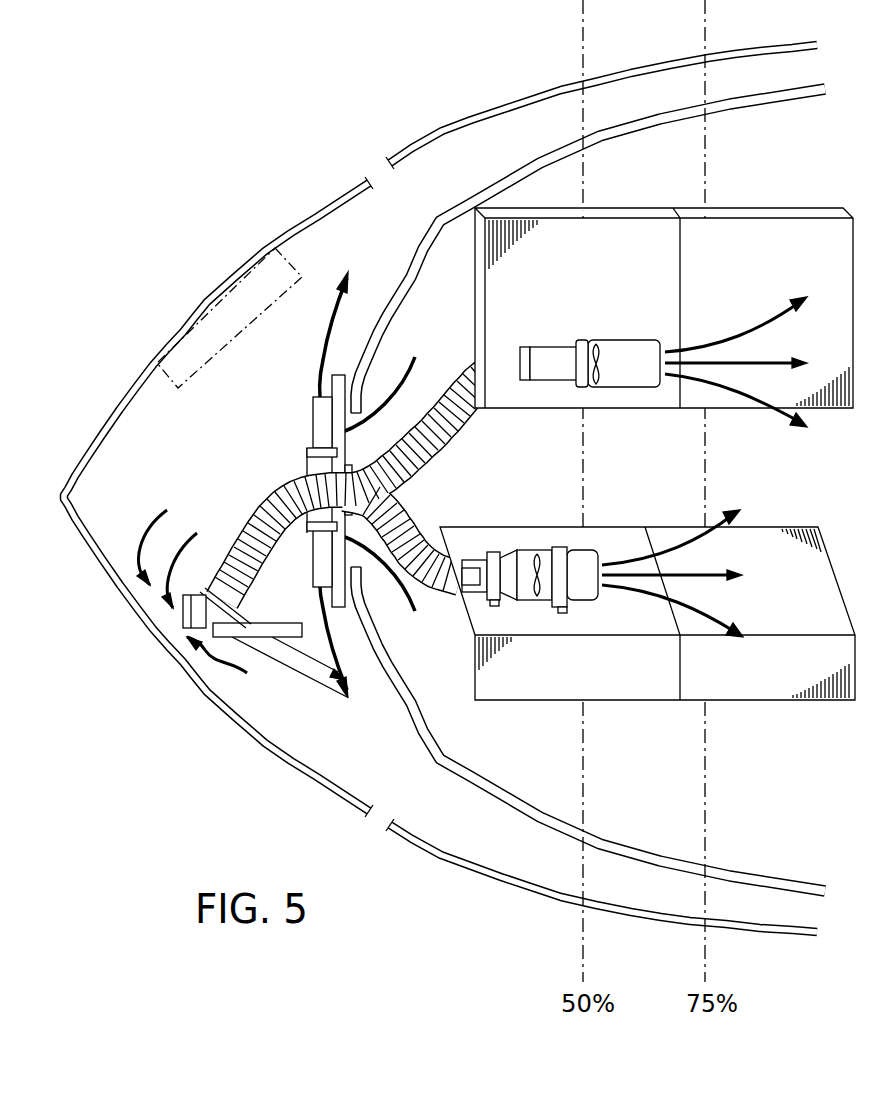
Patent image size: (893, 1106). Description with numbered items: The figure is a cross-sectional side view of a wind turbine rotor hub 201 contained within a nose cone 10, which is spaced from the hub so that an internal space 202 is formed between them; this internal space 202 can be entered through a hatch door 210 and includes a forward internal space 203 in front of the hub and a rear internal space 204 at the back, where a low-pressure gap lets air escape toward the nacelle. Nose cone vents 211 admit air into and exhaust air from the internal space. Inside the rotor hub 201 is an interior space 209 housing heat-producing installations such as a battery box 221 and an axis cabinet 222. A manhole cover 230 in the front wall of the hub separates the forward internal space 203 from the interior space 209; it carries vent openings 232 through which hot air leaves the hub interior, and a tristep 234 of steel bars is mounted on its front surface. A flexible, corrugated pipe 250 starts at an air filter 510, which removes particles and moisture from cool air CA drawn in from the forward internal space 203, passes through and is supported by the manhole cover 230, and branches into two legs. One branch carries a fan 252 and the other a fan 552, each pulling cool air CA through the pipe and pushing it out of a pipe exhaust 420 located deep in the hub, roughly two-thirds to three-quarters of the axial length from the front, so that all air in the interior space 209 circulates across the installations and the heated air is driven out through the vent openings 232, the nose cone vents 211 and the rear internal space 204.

The nose cone 10 is at (637, 912).
The rotor hub 201 is at (732, 103).
The internal space 202 is at (404, 238).
The forward internal space 203 is at (141, 528).
The rear internal space 204 is at (807, 83).
The interior space 209 is at (648, 475).
The hatch door 210 is at (207, 337).
The nose cone vents 211 is at (377, 172).
The battery box 221 is at (644, 268).
The axis cabinet 222 is at (826, 268).
The manhole cover 230 is at (328, 383).
The vent openings 232 is at (313, 420).
The tristep 234 is at (305, 460).
The pipe 250 is at (253, 527).
The fan 252 is at (535, 551).
The pipe exhaust 420 is at (598, 607).
The air filter 510 is at (177, 613).
The fan 552 is at (592, 345).
The cool air CA is at (733, 385).